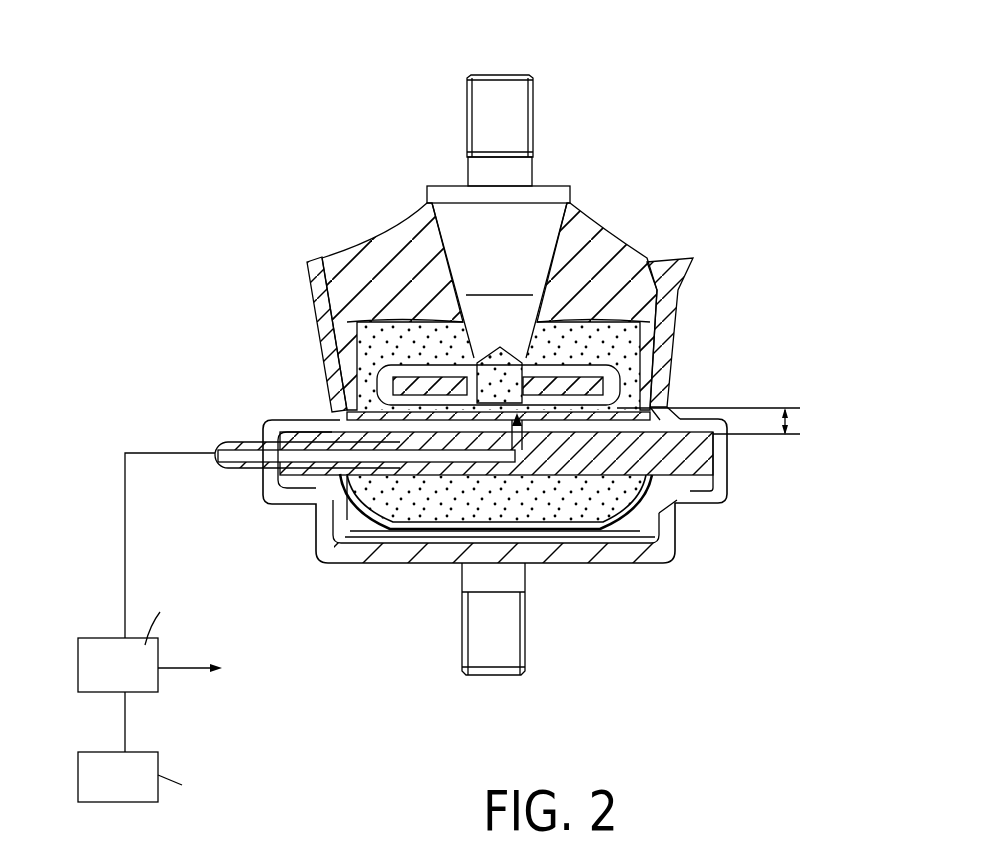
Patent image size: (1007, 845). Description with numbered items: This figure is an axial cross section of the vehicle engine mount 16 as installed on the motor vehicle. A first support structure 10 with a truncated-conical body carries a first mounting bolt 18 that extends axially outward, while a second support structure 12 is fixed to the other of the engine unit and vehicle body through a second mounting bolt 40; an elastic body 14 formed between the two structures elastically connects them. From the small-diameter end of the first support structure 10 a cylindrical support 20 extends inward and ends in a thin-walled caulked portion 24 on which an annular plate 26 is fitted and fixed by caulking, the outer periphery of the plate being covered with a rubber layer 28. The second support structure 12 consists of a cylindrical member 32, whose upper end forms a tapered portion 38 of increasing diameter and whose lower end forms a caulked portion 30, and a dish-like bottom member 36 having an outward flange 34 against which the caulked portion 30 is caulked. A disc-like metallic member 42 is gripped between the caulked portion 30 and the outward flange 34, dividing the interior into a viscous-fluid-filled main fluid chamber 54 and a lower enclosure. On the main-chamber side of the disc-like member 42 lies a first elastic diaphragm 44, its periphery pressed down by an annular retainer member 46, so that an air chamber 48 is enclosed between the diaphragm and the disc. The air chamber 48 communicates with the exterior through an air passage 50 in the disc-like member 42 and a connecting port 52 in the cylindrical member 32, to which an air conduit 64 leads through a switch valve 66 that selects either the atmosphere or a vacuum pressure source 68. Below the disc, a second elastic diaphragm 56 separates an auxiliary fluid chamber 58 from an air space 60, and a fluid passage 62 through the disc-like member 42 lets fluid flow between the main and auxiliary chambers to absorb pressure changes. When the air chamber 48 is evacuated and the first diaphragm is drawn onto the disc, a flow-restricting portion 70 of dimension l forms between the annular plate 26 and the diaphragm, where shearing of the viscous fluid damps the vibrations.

The first rigid support structure 10 is at (443, 165).
The second rigid support structure 12 is at (750, 553).
The elastic body 14 is at (610, 222).
The engine mount 16 is at (605, 86).
The first mounting bolt 18 is at (510, 92).
The cylindrical support 20 is at (580, 350).
The caulked portion 24 is at (460, 387).
The annular plate 26 is at (617, 388).
The rubber layer 28 is at (383, 377).
The caulked portion 30 is at (720, 481).
The cylindrical member 32 is at (737, 497).
The outward flange 34 is at (282, 505).
The bottom member 36 is at (658, 578).
The tapered portion 38 is at (683, 272).
The second mounting bolt 40 is at (502, 657).
The disc-like metallic member 42 is at (581, 468).
The first elastic diaphragm 44 is at (552, 468).
The annular retainer member 46 is at (357, 388).
The air chamber 48 is at (431, 468).
The air passage 50 is at (393, 466).
The connecting port 52 is at (240, 453).
The main fluid chamber 54 is at (426, 359).
The second elastic diaphragm 56 is at (453, 560).
The auxiliary fluid chamber 58 is at (470, 509).
The air space 60 is at (347, 522).
The fluid passage 62 is at (715, 457).
The air conduit 64 is at (118, 470).
The switch valve 66 is at (137, 684).
The vacuum pressure source 68 is at (136, 796).
The flow-restricting portion 70 is at (505, 468).